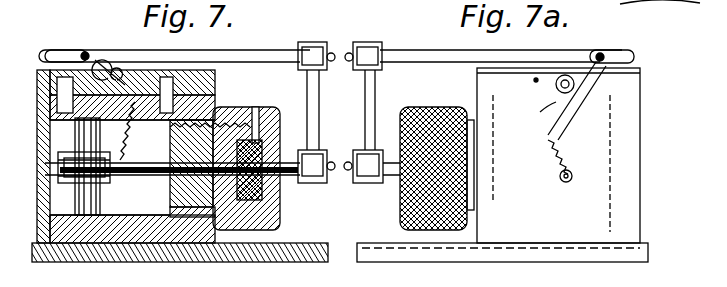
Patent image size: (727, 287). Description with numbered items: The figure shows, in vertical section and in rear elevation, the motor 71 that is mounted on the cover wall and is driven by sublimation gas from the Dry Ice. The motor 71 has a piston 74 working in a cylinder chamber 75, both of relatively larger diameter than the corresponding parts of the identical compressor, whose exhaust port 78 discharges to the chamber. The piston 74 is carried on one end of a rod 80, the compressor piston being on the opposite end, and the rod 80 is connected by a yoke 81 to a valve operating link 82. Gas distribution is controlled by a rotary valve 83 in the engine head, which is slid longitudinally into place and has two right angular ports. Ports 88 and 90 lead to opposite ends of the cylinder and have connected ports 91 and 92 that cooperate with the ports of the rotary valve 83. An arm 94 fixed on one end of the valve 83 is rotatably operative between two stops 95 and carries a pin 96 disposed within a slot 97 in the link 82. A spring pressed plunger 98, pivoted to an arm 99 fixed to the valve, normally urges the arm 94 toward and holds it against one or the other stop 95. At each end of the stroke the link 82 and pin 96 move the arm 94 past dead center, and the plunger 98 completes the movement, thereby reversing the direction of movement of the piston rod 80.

In FIG. 7, the motor 71 is at (248, 262).
In FIG. 7, the piston 74 is at (80, 190).
In FIG. 7, the cylinder chamber 75 is at (64, 207).
In FIG. 7A, the exhaust port 78 is at (642, 3).
In FIG. 7, the rod 80 is at (310, 183).
In FIG. 7A, the rod 80 is at (385, 178).
In FIG. 7, the yoke 81 is at (318, 108).
In FIG. 7A, the yoke 81 is at (364, 128).
In FIG. 7, the valve operating link 82 is at (268, 50).
In FIG. 7A, the valve operating link 82 is at (440, 50).
In FIG. 7, the rotary valve 83 is at (118, 72).
In FIG. 7, the port 88 is at (62, 108).
In FIG. 7, the port 90 is at (200, 100).
In FIG. 7, the connected port 91 is at (44, 82).
In FIG. 7, the connected port 92 is at (200, 82).
In FIG. 7A, the arm 94 is at (578, 62).
In FIG. 7A, the stop 95 is at (534, 80).
In FIG. 7, the pin 96 is at (85, 52).
In FIG. 7A, the pin 96 is at (601, 52).
In FIG. 7, the slot 97 is at (56, 54).
In FIG. 7A, the slot 97 is at (628, 57).
In FIG. 7A, the spring pressed plunger 98 is at (550, 160).
In FIG. 7A, the arm 99 is at (540, 108).